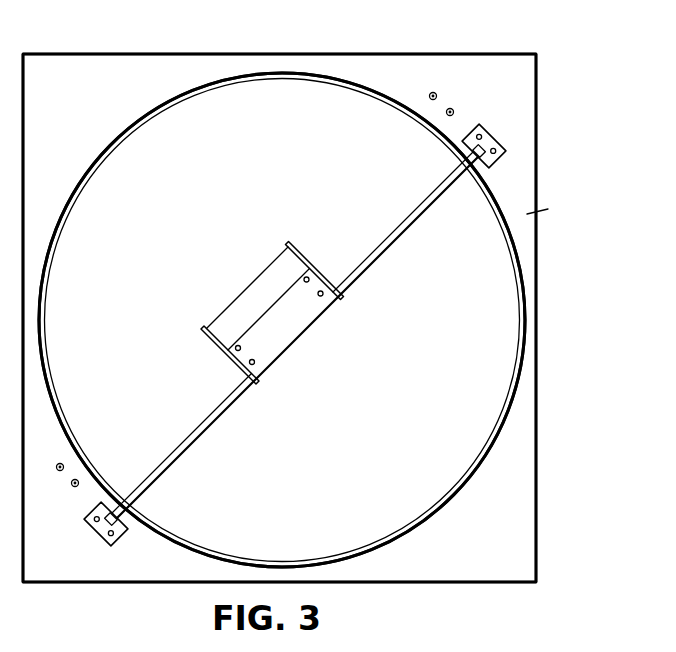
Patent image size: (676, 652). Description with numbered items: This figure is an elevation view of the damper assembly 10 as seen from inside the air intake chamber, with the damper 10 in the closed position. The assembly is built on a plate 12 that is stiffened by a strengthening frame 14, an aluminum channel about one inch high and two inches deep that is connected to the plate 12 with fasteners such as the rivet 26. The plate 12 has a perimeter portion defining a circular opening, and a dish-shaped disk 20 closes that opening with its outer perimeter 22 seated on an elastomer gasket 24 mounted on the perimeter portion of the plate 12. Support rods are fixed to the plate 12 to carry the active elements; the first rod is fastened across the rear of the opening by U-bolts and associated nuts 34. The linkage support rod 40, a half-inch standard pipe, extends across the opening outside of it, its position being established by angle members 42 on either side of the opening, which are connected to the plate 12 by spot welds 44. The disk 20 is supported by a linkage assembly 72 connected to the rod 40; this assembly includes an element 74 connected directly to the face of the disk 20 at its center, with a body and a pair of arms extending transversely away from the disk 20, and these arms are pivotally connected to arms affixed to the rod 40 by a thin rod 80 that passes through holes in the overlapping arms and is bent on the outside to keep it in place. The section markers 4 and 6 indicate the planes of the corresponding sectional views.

The damper assembly 10 is at (550, 404).
The plate 12 is at (508, 96).
The strengthening frame 14 is at (526, 42).
The dish-shaped disk 20 is at (470, 300).
The outer perimeter 22 is at (520, 337).
The elastomer gasket 24 is at (398, 538).
The rivet 26 is at (552, 211).
The nuts 34 is at (447, 111).
The linkage support rod 40 is at (158, 474).
The angle members 42 is at (494, 150).
The spot welds 44 is at (481, 136).
The linkage assembly 72 is at (344, 261).
The element 74 is at (275, 327).
The thin rod 80 is at (231, 304).
The section line 4- 4 is at (333, 237).
The section line 6- 6 is at (393, 179).